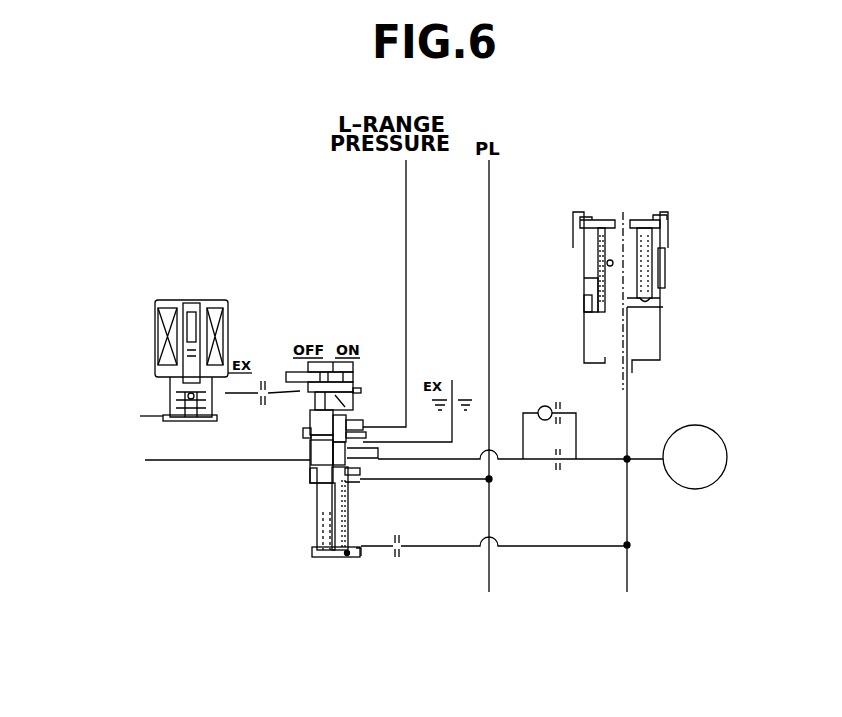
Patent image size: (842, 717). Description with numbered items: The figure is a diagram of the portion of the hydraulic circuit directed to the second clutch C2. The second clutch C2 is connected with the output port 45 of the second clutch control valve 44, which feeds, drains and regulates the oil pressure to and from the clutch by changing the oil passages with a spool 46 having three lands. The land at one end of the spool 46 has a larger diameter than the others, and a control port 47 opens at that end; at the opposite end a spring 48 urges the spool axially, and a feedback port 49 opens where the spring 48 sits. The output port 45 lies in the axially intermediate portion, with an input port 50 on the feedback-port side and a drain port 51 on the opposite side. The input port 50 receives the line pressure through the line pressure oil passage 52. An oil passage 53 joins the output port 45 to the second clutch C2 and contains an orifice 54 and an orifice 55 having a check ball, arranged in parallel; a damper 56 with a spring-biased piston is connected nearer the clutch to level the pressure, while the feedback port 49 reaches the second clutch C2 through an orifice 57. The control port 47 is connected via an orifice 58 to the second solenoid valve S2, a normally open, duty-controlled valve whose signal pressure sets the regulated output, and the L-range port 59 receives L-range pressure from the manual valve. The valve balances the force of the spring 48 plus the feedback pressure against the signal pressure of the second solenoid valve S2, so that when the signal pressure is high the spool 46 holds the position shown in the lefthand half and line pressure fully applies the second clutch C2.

The second solenoid valve S2 is at (214, 305).
The second clutch control valve 44 is at (335, 432).
The output port 45 is at (360, 455).
The spool 46 is at (313, 490).
The control port 47 is at (303, 397).
The spring 48 is at (348, 557).
The feedback port 49 is at (358, 557).
The input port 50 is at (352, 483).
The drain port 51 is at (362, 438).
The line pressure oil passage 52 is at (493, 479).
The oil passage 53 is at (607, 459).
The orifice 54 is at (565, 463).
The orifice having a check ball 55 is at (551, 405).
The damper 56 is at (665, 294).
The orifice 57 is at (402, 551).
The orifice 58 is at (250, 397).
The L-range port 59 is at (360, 420).
The second clutch C2 is at (695, 457).